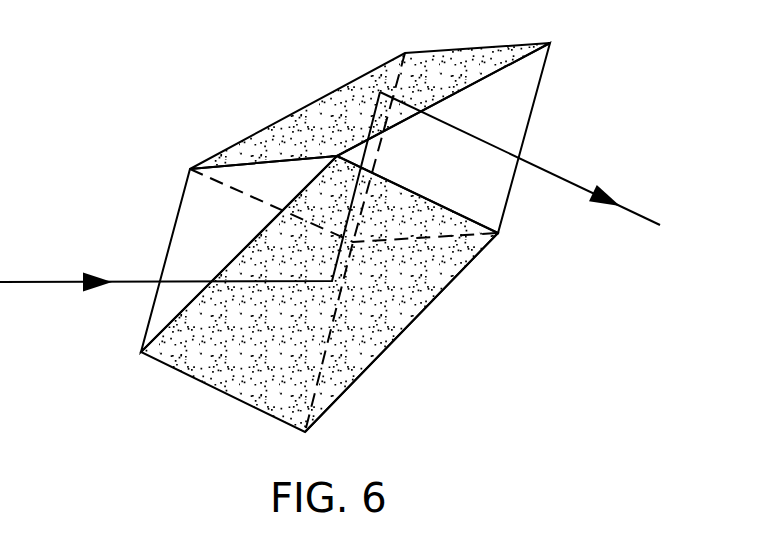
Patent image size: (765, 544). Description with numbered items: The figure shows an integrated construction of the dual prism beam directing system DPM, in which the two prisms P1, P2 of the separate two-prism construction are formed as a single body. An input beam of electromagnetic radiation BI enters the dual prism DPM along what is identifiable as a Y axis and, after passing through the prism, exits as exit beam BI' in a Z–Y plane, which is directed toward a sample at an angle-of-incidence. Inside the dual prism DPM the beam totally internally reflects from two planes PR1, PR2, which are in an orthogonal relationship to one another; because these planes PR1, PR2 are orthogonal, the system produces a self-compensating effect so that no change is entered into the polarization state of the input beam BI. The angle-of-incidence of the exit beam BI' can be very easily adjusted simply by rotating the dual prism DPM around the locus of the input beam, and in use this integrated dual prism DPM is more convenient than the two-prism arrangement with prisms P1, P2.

The dual prism beam directing system DPM is at (170, 204).
The input beam of electromagnetic radiation BI is at (190, 192).
The exit beam BI' is at (520, 158).
The first orthogonal plane PR1 is at (284, 361).
The second orthogonal plane PR2 is at (333, 150).
The first prism P1 is at (452, 294).
The second prism P2 is at (548, 89).